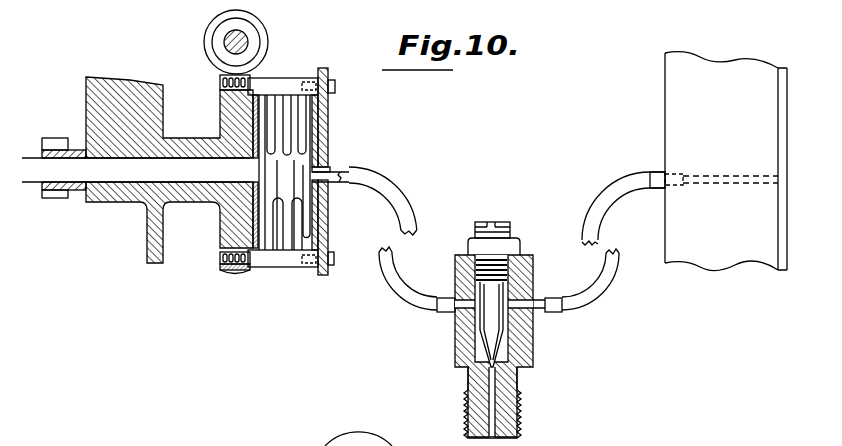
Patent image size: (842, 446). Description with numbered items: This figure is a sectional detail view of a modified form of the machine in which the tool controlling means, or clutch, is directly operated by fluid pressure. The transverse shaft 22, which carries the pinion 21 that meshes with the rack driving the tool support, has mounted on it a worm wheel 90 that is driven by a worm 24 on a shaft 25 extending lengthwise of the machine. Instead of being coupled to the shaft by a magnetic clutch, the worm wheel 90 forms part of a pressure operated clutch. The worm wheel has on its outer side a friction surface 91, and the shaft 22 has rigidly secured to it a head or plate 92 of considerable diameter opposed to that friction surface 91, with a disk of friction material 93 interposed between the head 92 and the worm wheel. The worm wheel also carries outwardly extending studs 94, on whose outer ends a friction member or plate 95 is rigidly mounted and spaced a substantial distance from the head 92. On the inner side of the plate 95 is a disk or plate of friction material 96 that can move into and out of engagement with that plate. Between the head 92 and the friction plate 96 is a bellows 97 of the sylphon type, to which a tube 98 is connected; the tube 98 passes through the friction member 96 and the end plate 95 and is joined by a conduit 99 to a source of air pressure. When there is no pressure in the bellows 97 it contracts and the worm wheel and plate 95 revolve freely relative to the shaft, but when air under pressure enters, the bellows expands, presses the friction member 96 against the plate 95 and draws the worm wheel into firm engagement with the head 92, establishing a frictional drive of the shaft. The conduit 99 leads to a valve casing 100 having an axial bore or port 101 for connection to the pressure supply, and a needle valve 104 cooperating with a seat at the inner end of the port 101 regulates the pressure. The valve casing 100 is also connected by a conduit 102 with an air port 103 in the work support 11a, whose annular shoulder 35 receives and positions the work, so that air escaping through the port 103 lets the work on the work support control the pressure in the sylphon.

The pinion 21 is at (64, 168).
The transverse shaft 22 is at (136, 170).
The worm 24 is at (205, 45).
The shaft 25 is at (226, 36).
The worm wheel 90 is at (228, 249).
The friction surface 91 is at (235, 221).
The head or plate 92 is at (265, 267).
The disk of friction material 93 is at (235, 208).
The studs 94 is at (282, 90).
The friction member or plate 95 is at (329, 130).
The disk or plate of friction material 96 is at (329, 198).
The bellows 97 is at (313, 227).
The tube 98 is at (333, 170).
The conduit 99 is at (406, 211).
The valve casing 100 is at (464, 333).
The axial bore or port 101 is at (517, 398).
The conduit 102 is at (600, 293).
The air port 103 is at (753, 187).
The needle valve 104 is at (490, 322).
The work support 11a is at (721, 161).
The annular shoulder 35 is at (778, 251).